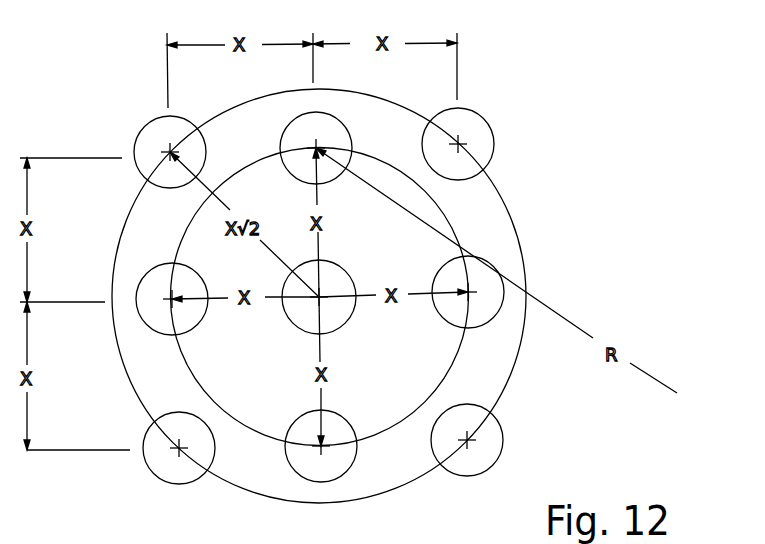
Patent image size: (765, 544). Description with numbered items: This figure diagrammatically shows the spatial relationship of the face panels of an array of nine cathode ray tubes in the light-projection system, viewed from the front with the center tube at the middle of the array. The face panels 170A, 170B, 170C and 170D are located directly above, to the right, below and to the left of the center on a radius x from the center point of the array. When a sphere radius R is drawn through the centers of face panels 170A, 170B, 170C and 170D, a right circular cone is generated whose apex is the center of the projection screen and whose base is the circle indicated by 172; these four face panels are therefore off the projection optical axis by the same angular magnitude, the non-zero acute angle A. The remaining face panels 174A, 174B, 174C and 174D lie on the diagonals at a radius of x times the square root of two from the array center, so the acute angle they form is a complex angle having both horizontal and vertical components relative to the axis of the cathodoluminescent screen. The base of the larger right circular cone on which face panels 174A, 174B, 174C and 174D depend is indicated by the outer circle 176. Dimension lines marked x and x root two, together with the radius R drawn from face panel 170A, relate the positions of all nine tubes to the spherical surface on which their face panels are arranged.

The face panel 170A is at (287, 127).
The face panel 170B is at (440, 320).
The face panel 170C is at (303, 408).
The face panel 170D is at (208, 314).
The base of right circular cone 172 is at (430, 397).
The face panel 174A is at (492, 130).
The face panel 174B is at (500, 447).
The face panel 174C is at (143, 465).
The face panel 174D is at (140, 136).
The base of right circular cone 176 is at (512, 219).